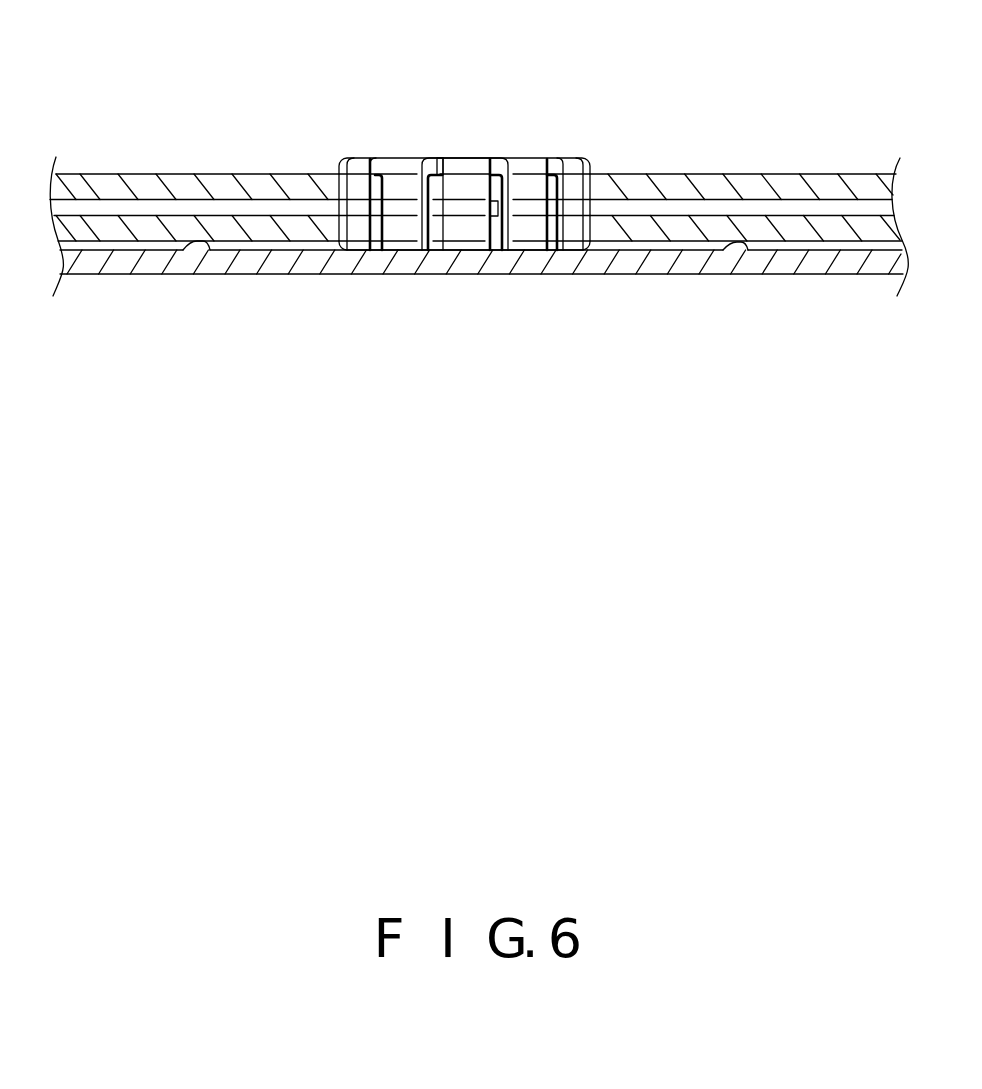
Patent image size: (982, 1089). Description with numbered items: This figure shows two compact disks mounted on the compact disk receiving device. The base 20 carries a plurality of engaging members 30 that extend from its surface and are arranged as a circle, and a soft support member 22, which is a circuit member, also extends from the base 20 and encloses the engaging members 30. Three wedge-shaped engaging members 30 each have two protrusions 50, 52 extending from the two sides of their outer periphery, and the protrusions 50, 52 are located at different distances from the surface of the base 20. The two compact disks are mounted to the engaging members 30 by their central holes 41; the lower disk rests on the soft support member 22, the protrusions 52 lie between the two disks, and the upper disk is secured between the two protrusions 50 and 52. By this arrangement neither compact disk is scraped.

The base 20 is at (282, 277).
The soft support member 22 is at (198, 242).
The engaging member 30 is at (437, 201).
The central hole 41 is at (338, 183).
The protrusion 50 is at (440, 160).
The protrusion 52 is at (497, 208).